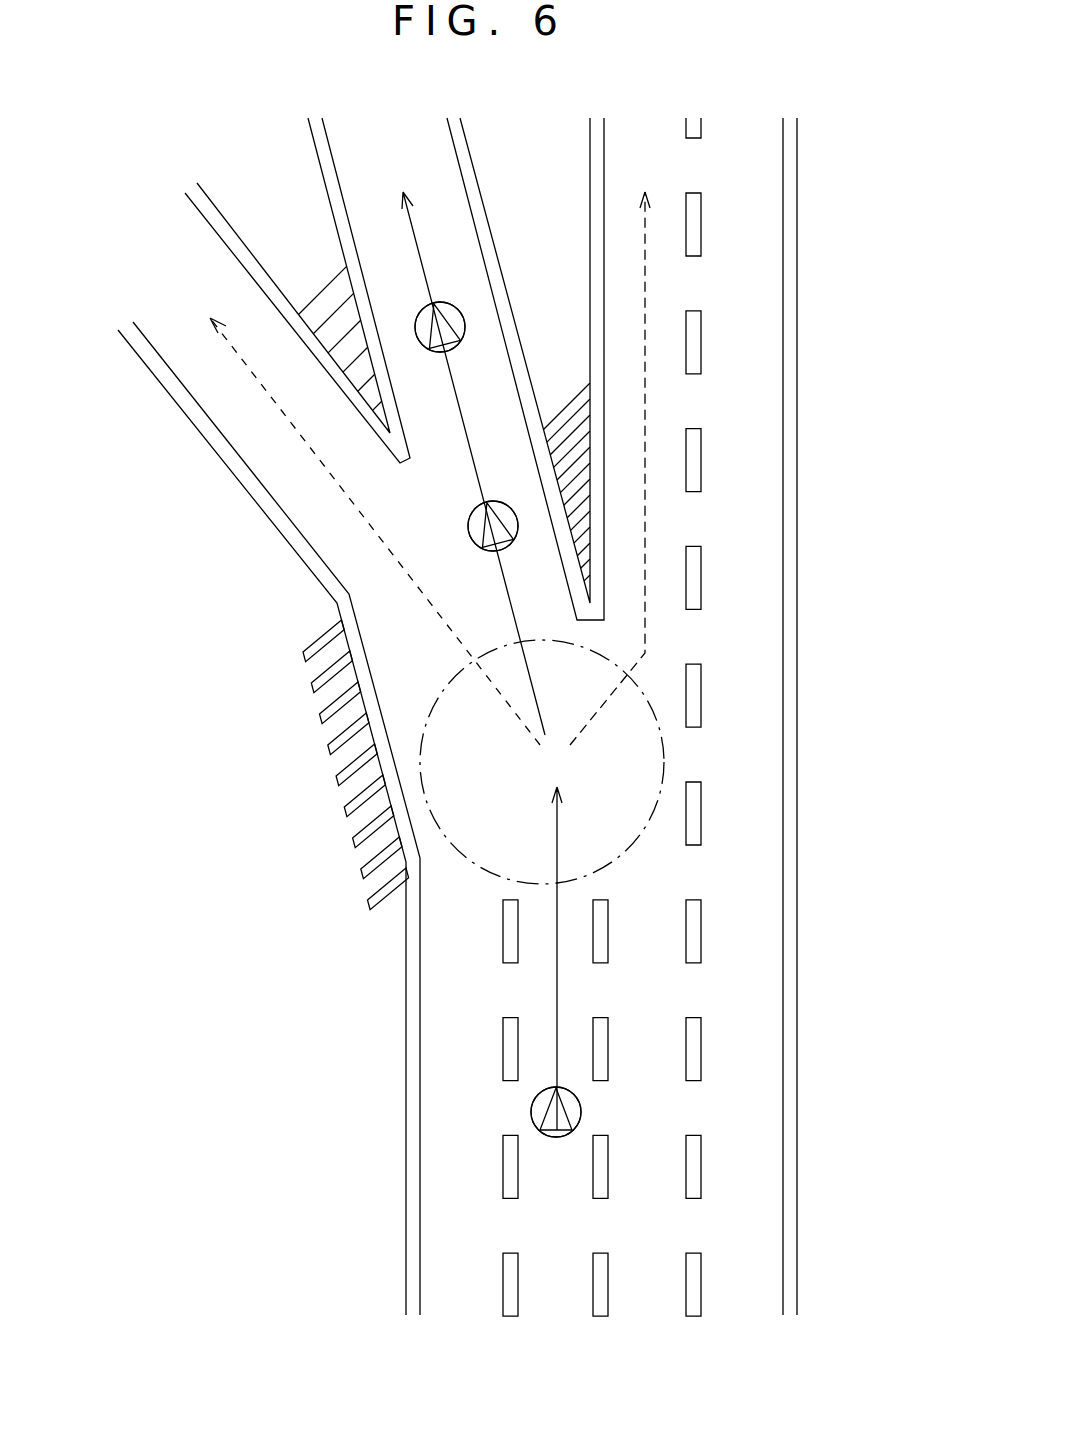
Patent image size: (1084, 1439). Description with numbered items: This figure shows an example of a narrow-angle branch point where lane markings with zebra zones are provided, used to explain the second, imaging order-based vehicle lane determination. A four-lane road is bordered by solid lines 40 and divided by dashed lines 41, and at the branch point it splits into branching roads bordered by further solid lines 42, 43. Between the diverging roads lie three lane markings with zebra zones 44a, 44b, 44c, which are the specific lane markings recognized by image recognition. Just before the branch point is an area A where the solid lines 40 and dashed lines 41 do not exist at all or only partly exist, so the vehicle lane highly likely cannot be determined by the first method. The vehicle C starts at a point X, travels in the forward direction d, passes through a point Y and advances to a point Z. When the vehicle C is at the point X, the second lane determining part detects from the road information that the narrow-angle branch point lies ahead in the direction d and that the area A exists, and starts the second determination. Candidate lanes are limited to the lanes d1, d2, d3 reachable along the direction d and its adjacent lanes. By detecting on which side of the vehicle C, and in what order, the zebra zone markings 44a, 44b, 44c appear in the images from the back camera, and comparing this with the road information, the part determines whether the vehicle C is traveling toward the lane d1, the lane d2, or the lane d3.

The solid line 40 is at (406, 1033).
The dashed line 41 is at (695, 368).
The solid line 42 is at (475, 188).
The solid line 43 is at (228, 230).
The lane marking with zebra zone 44a is at (293, 641).
The lane marking with zebra zone 44b is at (298, 296).
The lane marking with zebra zone 44c is at (551, 401).
The area A is at (665, 768).
The vehicle C is at (420, 312).
The point X is at (556, 1112).
The point Y is at (493, 526).
The point Z is at (440, 327).
The forward direction d is at (557, 990).
The lane d1 is at (435, 608).
The lane d2 is at (502, 570).
The lane d3 is at (645, 520).